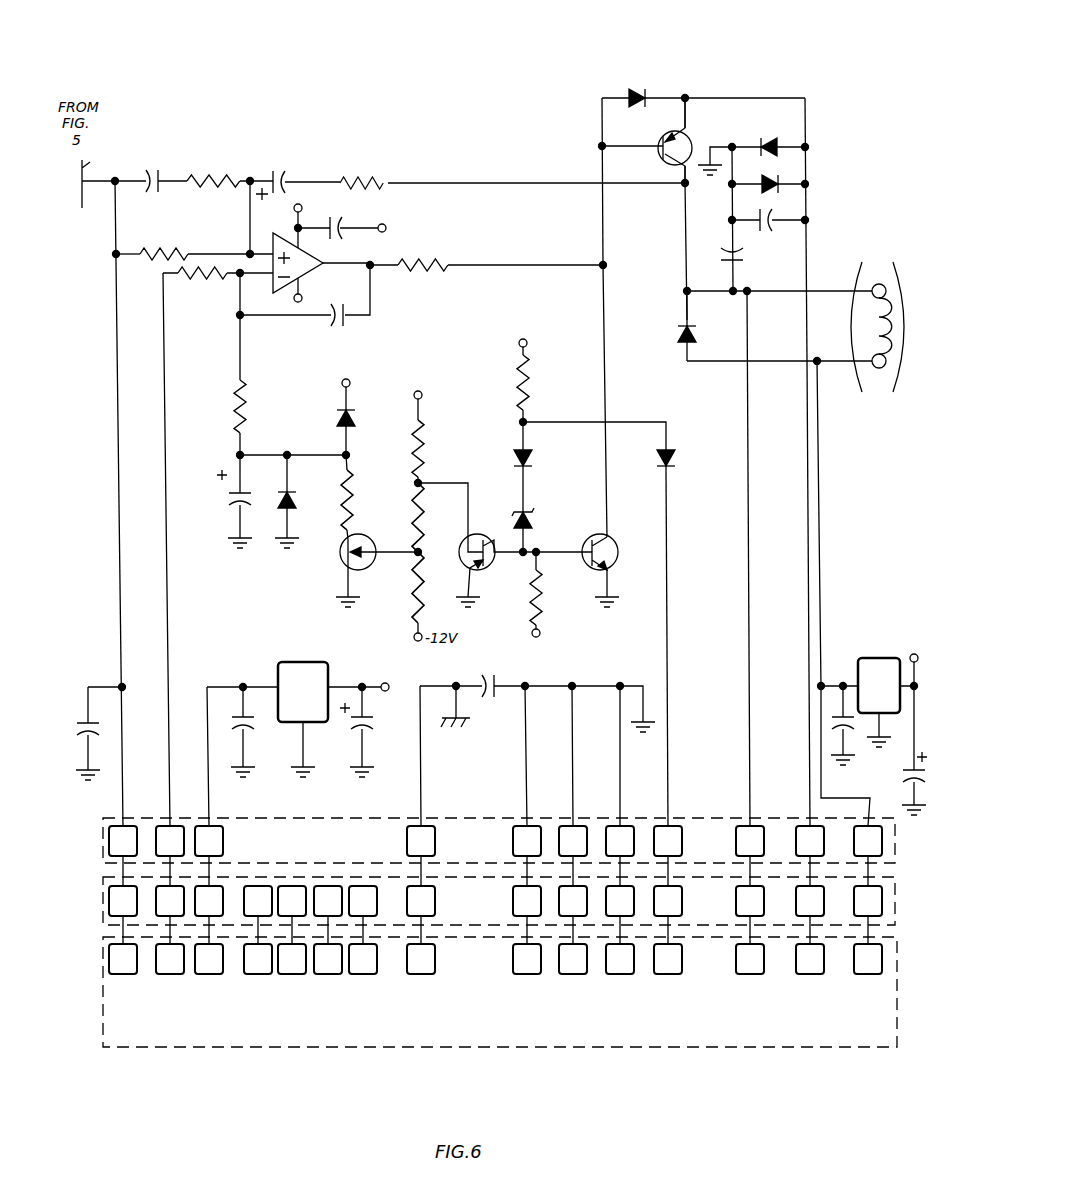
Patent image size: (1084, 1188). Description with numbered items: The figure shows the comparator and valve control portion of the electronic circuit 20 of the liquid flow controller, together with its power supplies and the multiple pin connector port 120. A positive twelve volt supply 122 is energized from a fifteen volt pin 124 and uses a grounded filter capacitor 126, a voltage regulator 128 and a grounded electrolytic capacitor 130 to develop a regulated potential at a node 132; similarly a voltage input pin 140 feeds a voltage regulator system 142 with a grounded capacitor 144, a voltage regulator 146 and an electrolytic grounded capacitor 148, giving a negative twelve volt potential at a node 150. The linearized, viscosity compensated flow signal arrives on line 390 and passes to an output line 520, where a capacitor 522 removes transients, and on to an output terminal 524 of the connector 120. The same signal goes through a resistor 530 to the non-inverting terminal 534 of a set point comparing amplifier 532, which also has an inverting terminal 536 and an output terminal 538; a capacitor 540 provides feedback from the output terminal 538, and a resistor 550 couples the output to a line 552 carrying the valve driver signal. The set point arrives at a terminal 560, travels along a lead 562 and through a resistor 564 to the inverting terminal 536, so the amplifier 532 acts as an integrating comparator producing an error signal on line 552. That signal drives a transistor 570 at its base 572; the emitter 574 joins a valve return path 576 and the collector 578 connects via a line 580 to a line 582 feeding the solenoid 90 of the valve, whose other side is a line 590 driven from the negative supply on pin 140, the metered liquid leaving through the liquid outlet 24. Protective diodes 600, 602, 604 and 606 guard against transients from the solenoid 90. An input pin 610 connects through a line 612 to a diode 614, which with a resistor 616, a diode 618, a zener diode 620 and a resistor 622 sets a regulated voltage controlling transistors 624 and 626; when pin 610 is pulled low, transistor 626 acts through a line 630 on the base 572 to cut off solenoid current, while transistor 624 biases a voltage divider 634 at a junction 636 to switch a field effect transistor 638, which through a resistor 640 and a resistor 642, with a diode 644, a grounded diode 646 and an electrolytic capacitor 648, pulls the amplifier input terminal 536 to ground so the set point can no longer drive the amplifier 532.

The electronic circuit 20 is at (433, 33).
The liquid outlet 24 is at (846, 282).
The solenoid 90 is at (902, 282).
The multiple pin connector port 120 is at (511, 958).
The positive 12 volt supply 122 is at (222, 686).
The 15 volt pin 124 is at (292, 975).
The grounded filter capacitor 126 is at (248, 727).
The voltage regulator 128 is at (296, 662).
The grounded electrolytic capacitor 130 is at (372, 727).
The node 132 is at (390, 688).
The voltage input pin 140 is at (884, 963).
The voltage regulator system 142 is at (841, 684).
The grounded capacitor 144 is at (836, 718).
The voltage regulator 146 is at (867, 658).
The electrolytic grounded capacitor 148 is at (905, 772).
The node 150 is at (902, 641).
The line 390 is at (112, 180).
The output line 520 is at (113, 263).
The capacitor 522 is at (75, 710).
The output terminal 524 is at (138, 965).
The resistor 530 is at (158, 248).
The set point comparing amplifier 532 is at (322, 246).
The non-inverting terminal 534 is at (252, 250).
The inverting terminal 536 is at (252, 278).
The output terminal 538 is at (346, 268).
The capacitor 540 is at (347, 318).
The resistor 550 is at (448, 262).
The line 552 is at (604, 232).
The terminal 560 is at (184, 962).
The lead 562 is at (170, 748).
The resistor 564 is at (178, 276).
The transistor 570 is at (672, 128).
The base 572 is at (662, 140).
The emitter 574 is at (694, 136).
The valve return path 576 is at (773, 97).
The collector 578 is at (668, 170).
The line 580 is at (687, 243).
The line 582 is at (803, 277).
The line 590 is at (812, 498).
The diode 600 is at (680, 333).
The diode 602 is at (778, 145).
The diode 604 is at (782, 183).
The diode 606 is at (632, 94).
The input pin 610 is at (685, 957).
The line 612 is at (671, 775).
The diode 614 is at (680, 452).
The resistor 616 is at (538, 390).
The diode 618 is at (515, 455).
The zener diode 620 is at (530, 503).
The resistor 622 is at (530, 590).
The transistor 624 is at (475, 535).
The transistor 626 is at (605, 538).
The line 630 is at (604, 313).
The voltage divider 634 is at (428, 420).
The junction 636 is at (415, 553).
The field effect transistor 638 is at (340, 560).
The resistor 640 is at (352, 490).
The resistor 642 is at (243, 393).
The diode 644 is at (340, 418).
The grounded diode 646 is at (277, 515).
The electrolytic capacitor 648 is at (238, 505).